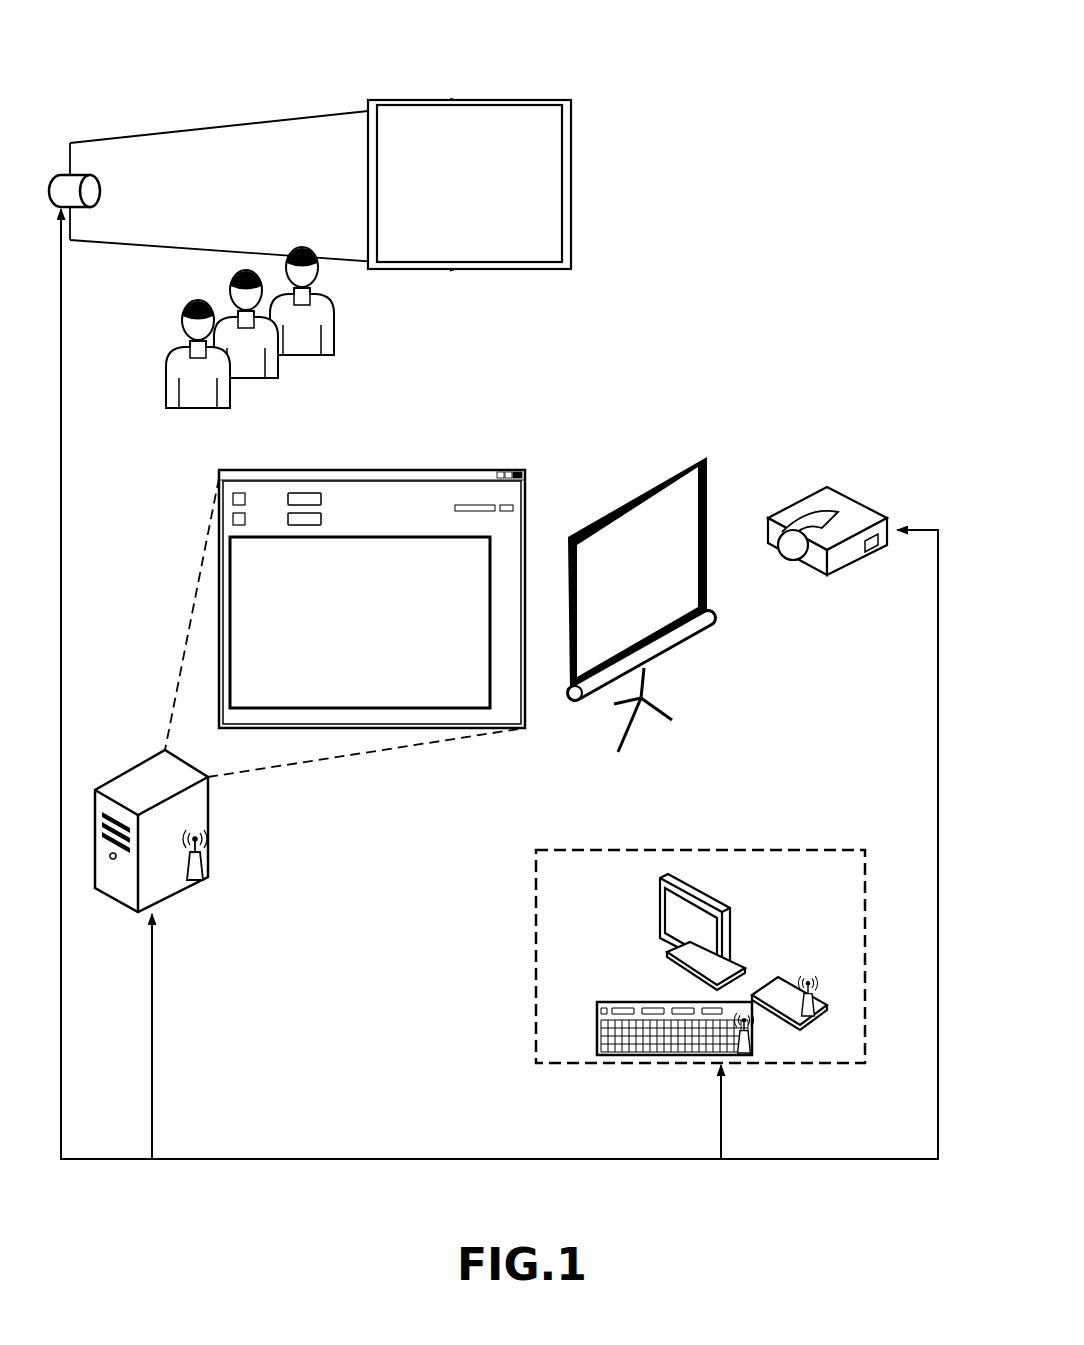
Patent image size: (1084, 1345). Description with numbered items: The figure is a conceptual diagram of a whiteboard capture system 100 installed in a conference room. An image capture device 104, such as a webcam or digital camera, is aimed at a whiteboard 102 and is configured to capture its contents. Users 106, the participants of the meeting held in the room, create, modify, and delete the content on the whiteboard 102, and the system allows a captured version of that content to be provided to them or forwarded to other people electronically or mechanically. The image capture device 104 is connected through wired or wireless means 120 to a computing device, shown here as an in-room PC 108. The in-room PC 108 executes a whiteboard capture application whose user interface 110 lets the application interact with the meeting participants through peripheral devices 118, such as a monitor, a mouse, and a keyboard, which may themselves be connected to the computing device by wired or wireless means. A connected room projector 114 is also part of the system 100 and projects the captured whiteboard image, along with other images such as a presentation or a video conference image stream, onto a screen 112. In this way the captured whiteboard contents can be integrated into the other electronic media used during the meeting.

The system 100 is at (690, 38).
The whiteboard 102 is at (441, 93).
The image capture device 104 is at (112, 190).
The users 106 is at (158, 292).
The in-room PC 108 is at (159, 748).
The user interface 110 is at (429, 461).
The screen 112 is at (629, 469).
The room projector 114 is at (804, 469).
The peripheral devices 118 is at (550, 839).
The wired or wireless means 120 is at (311, 1153).